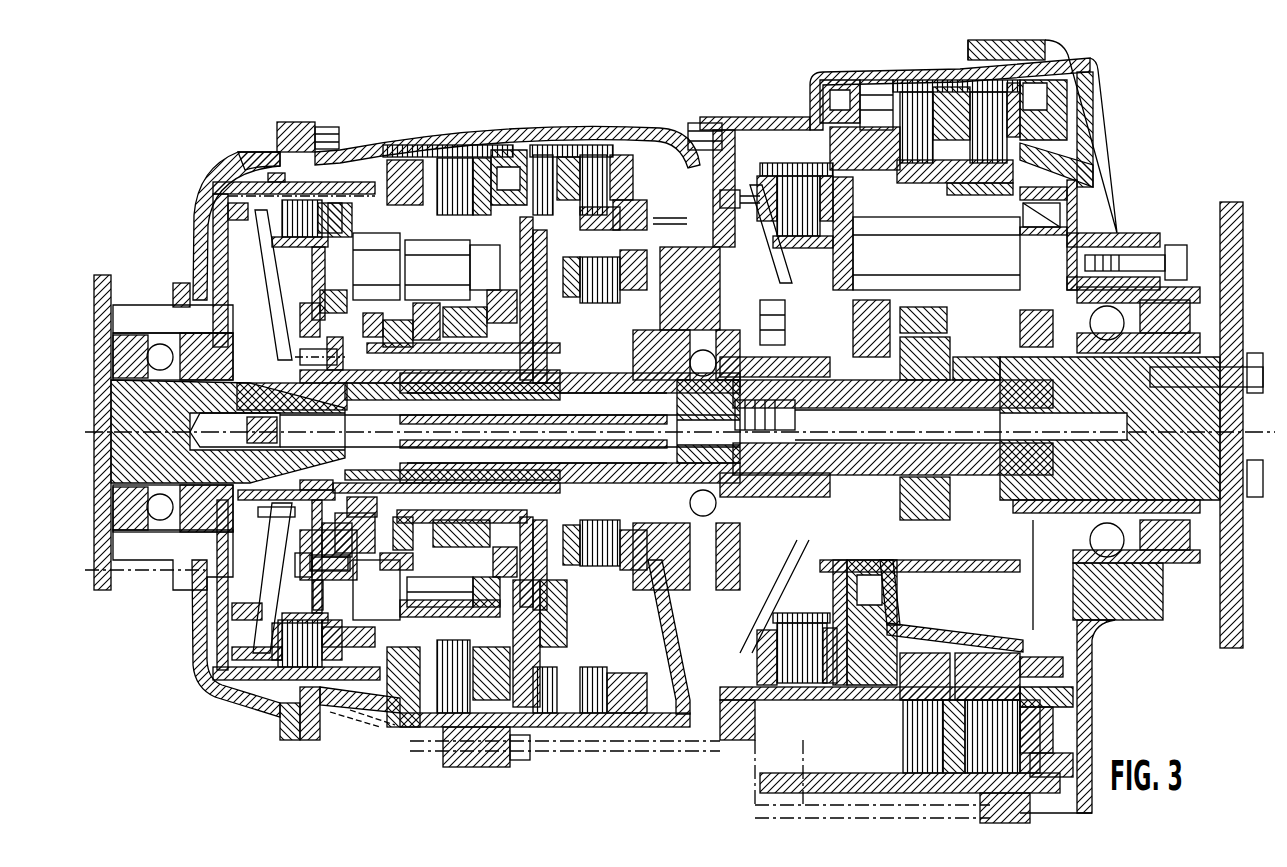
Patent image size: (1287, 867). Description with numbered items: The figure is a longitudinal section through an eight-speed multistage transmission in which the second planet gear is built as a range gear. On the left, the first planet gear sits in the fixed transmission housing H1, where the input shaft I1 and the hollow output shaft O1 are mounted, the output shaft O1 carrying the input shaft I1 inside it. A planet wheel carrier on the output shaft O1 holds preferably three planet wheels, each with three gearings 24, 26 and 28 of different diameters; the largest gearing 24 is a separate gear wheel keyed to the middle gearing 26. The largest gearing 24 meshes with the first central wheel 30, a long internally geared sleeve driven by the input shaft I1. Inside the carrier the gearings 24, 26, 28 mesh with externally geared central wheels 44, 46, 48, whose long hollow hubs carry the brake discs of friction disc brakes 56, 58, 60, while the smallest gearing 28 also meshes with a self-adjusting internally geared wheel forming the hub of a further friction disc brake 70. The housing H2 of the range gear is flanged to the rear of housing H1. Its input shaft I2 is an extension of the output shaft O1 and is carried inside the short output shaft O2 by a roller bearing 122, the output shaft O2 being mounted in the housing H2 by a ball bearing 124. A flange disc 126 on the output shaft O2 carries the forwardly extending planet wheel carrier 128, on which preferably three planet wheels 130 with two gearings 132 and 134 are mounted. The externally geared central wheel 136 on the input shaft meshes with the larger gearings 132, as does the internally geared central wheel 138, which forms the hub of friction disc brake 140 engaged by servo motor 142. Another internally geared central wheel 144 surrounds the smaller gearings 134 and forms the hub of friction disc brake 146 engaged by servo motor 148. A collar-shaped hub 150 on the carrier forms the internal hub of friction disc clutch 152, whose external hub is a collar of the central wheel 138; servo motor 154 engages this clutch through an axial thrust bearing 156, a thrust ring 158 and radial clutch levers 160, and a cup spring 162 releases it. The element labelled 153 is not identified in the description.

The first central wheel 30 is at (232, 165).
The largest gearing 24 is at (367, 182).
The friction disc brake 70 is at (455, 147).
The friction disc brake 60 is at (540, 143).
The friction disc brake 58 is at (597, 143).
The friction disc clutch 152 is at (773, 163).
The servo motor 142 is at (853, 80).
The friction disc brake 140 is at (913, 80).
The friction disc brake 146 is at (1043, 57).
The servo motor 148 is at (1067, 120).
The piston 153 is at (840, 167).
The internally geared central wheel 138 is at (927, 177).
The cup spring 162 is at (720, 200).
The friction disc brake 56 is at (657, 270).
The middle gearing 26 is at (392, 268).
The smallest gearing 28 is at (452, 268).
The externally geared central wheel 44 is at (320, 313).
The radial clutch levers 160 is at (777, 275).
The hub 150 is at (833, 262).
The planet wheels 130 is at (925, 263).
The internally geared central wheel 144 is at (983, 195).
The flange disc 126 is at (1070, 218).
The servo motor 154 is at (760, 333).
The axial thrust bearing 156 is at (787, 303).
The thrust ring 158 is at (800, 333).
The input shaft I2 is at (862, 397).
The front gearings 132 is at (943, 330).
The smaller gearings 134 is at (977, 307).
The externally geared central wheel 136 is at (933, 360).
The externally geared central wheel 46 is at (410, 303).
The externally geared central wheel 48 is at (437, 303).
The output shaft O1 is at (675, 453).
The roller bearing 122 is at (993, 480).
The planet wheel carrier 128 is at (950, 557).
The output shaft O2 is at (1103, 465).
The ball bearing 124 is at (1078, 560).
The input shaft I1 is at (133, 465).
The transmission housing H1 is at (200, 670).
The housing H2 is at (1090, 683).